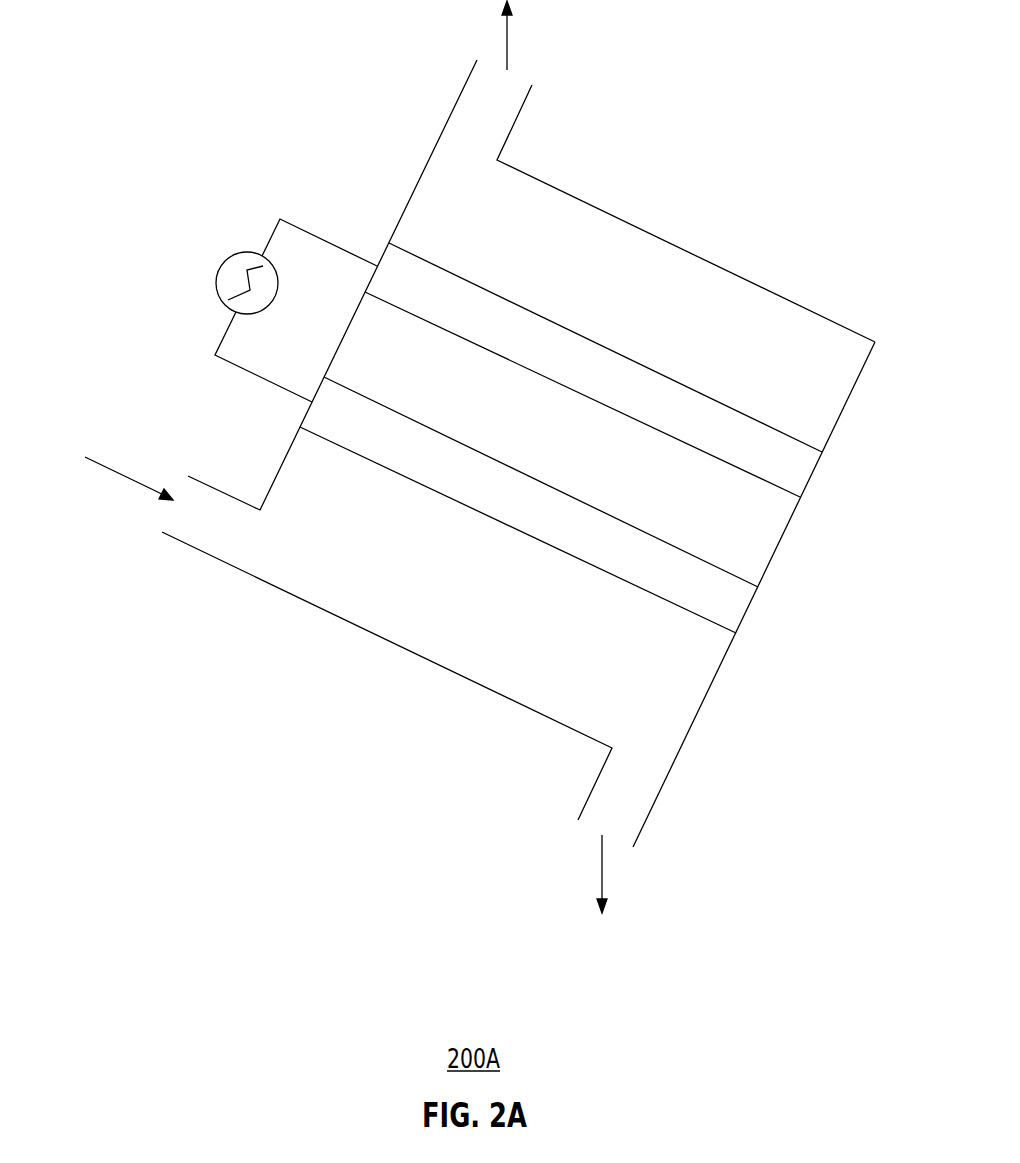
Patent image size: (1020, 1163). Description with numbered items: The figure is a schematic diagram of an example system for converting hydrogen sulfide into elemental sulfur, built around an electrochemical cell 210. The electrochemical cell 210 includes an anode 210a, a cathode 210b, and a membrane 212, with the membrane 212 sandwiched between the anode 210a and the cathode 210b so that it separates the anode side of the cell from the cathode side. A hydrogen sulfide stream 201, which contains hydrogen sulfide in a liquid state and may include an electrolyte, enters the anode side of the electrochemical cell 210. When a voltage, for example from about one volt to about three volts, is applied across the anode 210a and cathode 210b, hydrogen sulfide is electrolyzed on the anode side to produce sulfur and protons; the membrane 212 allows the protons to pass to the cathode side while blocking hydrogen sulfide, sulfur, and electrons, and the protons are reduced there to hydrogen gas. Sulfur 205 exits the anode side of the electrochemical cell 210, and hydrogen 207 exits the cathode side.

The electrochemical cell 210 is at (726, 179).
The anode 210a is at (305, 418).
The cathode 210b is at (390, 258).
The membrane 212 is at (775, 545).
The hydrogen sulfide stream 201 is at (117, 473).
The sulfur 205 is at (602, 885).
The hydrogen 207 is at (507, 48).